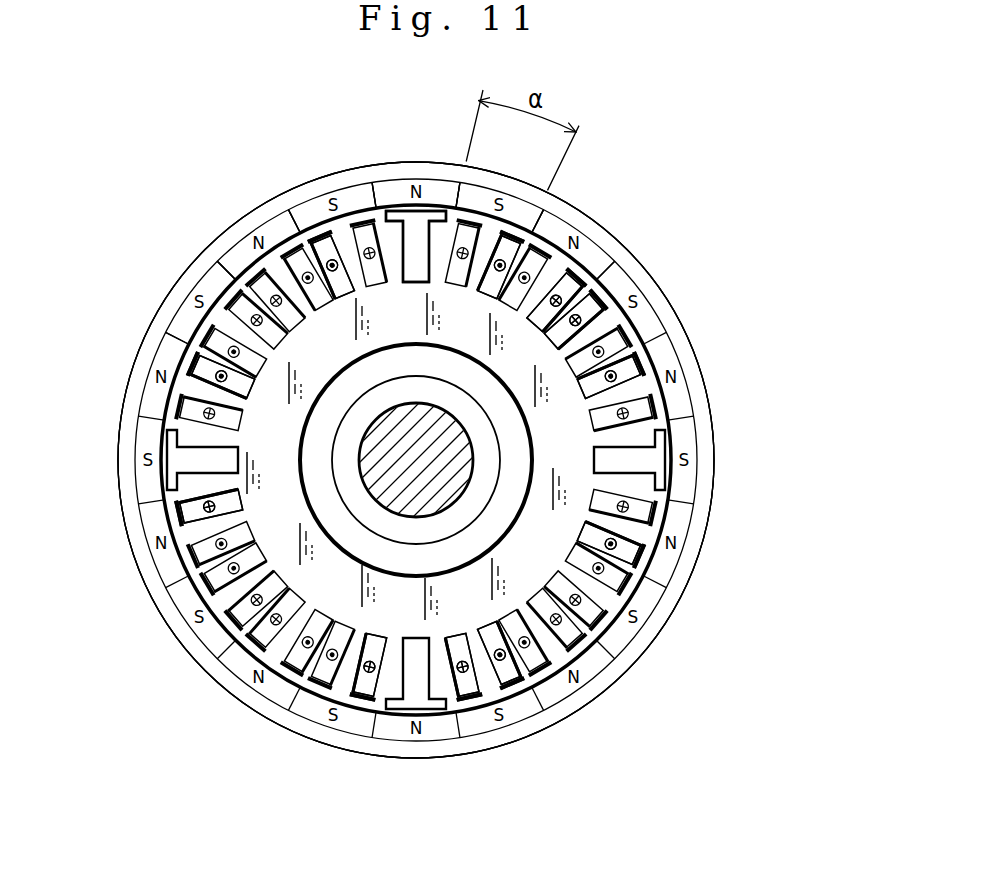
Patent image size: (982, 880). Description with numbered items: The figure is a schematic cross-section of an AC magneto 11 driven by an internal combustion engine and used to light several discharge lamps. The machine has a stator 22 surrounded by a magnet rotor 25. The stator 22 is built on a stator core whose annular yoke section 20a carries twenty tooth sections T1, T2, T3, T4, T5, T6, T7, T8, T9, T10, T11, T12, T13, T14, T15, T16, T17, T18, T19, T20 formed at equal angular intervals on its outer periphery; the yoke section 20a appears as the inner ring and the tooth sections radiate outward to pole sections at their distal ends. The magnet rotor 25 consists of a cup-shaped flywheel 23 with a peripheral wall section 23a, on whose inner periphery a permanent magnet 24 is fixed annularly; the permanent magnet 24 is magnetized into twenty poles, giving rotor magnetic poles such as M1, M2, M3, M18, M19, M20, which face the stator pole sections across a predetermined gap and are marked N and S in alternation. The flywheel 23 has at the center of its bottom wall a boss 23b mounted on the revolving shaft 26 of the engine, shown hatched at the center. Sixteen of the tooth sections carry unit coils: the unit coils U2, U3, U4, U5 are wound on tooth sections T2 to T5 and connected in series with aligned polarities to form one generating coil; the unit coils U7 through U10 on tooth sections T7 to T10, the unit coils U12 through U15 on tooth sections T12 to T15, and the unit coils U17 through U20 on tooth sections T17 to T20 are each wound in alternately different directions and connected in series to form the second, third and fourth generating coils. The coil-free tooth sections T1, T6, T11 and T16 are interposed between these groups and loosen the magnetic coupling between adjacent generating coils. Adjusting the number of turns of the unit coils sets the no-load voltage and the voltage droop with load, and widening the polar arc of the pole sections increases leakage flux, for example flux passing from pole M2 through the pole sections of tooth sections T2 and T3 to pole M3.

The motor 11 is at (640, 128).
The annular yoke section 20a is at (536, 548).
The stator 22 is at (642, 426).
The flywheel 23 is at (720, 393).
The peripheral wall section 23a is at (711, 478).
The boss 23b is at (370, 517).
The permanent magnet 24 is at (421, 236).
The magnet rotor 25 is at (684, 307).
The revolving shaft 26 is at (413, 478).
The tooth section T1 is at (432, 212).
The tooth section T2 is at (495, 222).
The tooth section T3 is at (562, 259).
The tooth section T4 is at (617, 314).
The tooth section T5 is at (652, 383).
The tooth section T6 is at (680, 447).
The tooth section T7 is at (652, 537).
The tooth section T8 is at (617, 606).
The tooth section T9 is at (565, 665).
The tooth section T10 is at (495, 698).
The tooth section T11 is at (410, 710).
The tooth section T12 is at (339, 696).
The tooth section T13 is at (270, 661).
The tooth section T14 is at (215, 606).
The tooth section T15 is at (185, 533).
The tooth section T16 is at (176, 458).
The tooth section T17 is at (180, 383).
The tooth section T18 is at (215, 314).
The tooth section T19 is at (272, 265).
The tooth section T20 is at (339, 224).
The rotor magnetic pole M1 is at (397, 200).
The rotor magnetic pole M2 is at (530, 218).
The rotor magnetic pole M3 is at (590, 257).
The rotor magnetic pole M18 is at (213, 283).
The rotor magnetic pole M19 is at (237, 260).
The rotor magnetic pole M20 is at (345, 205).
The unit coil U2 is at (510, 252).
The unit coil U3 is at (558, 276).
The unit coil U4 is at (600, 305).
The unit coil U5 is at (640, 388).
The unit coil U7 is at (625, 550).
The unit coil U10 is at (512, 690).
The unit coil U12 is at (362, 700).
The unit coil U15 is at (168, 500).
The unit coil U17 is at (182, 420).
The unit coil U20 is at (310, 240).